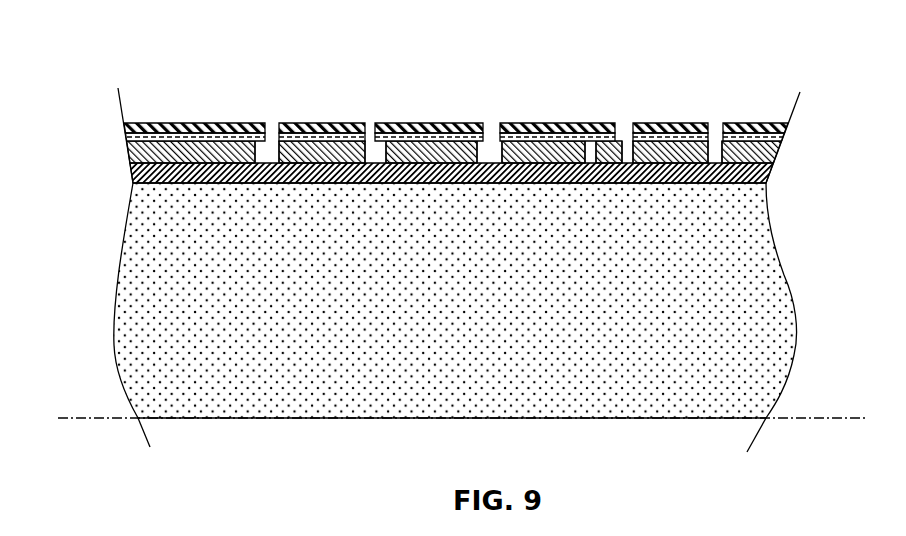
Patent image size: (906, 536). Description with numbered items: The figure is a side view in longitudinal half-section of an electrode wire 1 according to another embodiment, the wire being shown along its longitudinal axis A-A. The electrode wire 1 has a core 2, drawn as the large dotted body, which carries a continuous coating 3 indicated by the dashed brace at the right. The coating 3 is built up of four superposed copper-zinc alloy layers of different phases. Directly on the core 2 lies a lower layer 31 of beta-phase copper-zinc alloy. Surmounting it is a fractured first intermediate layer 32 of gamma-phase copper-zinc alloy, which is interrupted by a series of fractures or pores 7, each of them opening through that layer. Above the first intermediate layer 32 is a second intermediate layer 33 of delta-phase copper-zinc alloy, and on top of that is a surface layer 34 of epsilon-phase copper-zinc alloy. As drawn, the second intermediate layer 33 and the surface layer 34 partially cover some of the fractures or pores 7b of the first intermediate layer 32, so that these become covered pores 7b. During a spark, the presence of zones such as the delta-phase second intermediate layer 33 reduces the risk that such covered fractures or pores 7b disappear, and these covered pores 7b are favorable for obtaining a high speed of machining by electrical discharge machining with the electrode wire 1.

The electrode wire 1 is at (133, 83).
The core 2 is at (778, 322).
The coating 3 is at (766, 182).
The fractures or pores 7 is at (627, 155).
The covered fractures or pores 7b is at (264, 155).
The lower layer 31 is at (131, 177).
The first intermediate layer 32 is at (128, 150).
The second intermediate layer 33 is at (124, 138).
The surface layer 34 is at (123, 128).